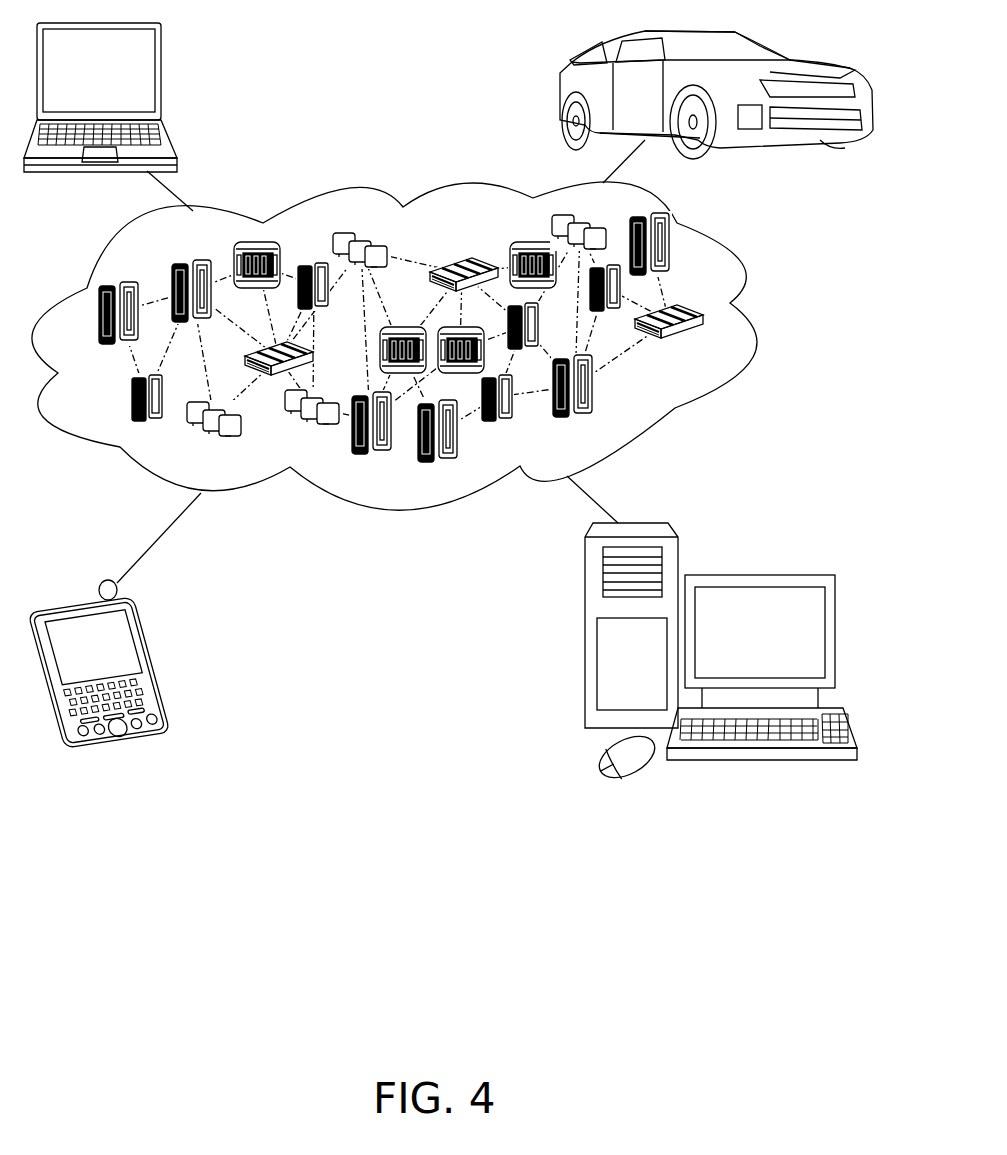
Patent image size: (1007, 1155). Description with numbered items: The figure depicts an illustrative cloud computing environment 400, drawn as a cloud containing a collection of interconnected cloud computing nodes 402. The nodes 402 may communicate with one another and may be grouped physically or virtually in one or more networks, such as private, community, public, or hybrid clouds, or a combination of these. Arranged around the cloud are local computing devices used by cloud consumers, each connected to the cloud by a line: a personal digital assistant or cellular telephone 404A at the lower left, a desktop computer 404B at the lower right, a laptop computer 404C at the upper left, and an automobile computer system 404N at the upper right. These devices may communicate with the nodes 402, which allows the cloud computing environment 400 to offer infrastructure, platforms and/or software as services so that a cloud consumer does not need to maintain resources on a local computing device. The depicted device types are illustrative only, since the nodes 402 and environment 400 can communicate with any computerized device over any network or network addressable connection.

The cloud computing environment 400 is at (425, 346).
The cloud computing node 402 is at (708, 350).
The personal digital assistant (PDA) or cellular telephone 404A is at (142, 628).
The desktop computer 404B is at (748, 575).
The laptop computer 404C is at (165, 52).
The automobile computer system 404N is at (558, 93).